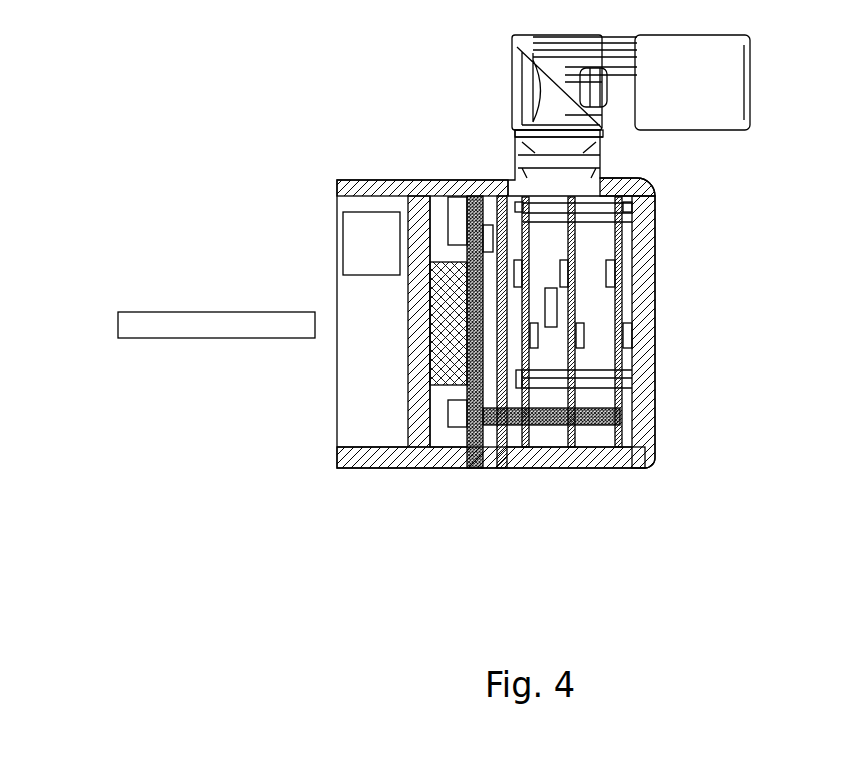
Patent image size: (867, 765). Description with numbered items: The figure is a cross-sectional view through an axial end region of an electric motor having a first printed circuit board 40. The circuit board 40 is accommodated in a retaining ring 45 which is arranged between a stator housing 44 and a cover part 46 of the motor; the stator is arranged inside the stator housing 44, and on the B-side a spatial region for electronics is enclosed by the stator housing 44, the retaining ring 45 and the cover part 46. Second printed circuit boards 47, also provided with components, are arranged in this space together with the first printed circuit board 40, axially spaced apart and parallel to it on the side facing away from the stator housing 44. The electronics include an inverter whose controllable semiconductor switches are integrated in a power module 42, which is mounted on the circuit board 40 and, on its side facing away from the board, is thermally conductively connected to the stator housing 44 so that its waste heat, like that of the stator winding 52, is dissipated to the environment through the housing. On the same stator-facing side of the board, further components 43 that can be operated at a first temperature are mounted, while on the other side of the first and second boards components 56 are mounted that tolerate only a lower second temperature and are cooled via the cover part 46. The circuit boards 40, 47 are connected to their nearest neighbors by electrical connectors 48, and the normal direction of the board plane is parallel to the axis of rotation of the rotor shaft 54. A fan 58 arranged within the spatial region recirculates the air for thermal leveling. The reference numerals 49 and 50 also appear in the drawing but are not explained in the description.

The first printed circuit board 40 is at (468, 198).
The power module 42 is at (449, 310).
The further components 43 is at (457, 235).
The stator housing 44 is at (360, 190).
The retaining ring 45 is at (484, 190).
The cover part 46 is at (640, 190).
The second printed circuit boards 47 is at (618, 255).
The electrical connectors 48 is at (612, 404).
The base plate 49 is at (433, 445).
The openings 50 is at (519, 448).
The stator winding 52 is at (360, 245).
The rotor shaft 54 is at (177, 323).
The components 56 is at (612, 275).
The fan 58 is at (552, 312).